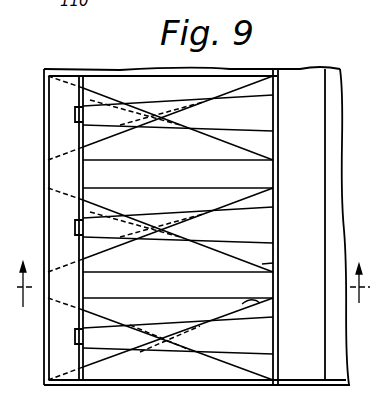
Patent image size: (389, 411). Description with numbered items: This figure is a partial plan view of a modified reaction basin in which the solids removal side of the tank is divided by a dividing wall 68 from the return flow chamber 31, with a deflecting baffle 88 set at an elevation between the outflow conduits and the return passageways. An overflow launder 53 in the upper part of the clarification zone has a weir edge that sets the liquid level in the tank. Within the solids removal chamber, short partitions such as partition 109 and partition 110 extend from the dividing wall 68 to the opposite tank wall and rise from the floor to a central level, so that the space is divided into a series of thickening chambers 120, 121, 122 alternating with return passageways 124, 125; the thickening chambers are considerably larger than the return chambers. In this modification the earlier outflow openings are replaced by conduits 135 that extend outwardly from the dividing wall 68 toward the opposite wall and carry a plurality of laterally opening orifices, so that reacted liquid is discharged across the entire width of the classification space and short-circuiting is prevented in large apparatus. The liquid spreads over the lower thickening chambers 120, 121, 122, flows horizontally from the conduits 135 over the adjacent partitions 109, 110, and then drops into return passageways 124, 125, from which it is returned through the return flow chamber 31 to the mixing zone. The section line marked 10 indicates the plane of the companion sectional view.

The launder 53 is at (63, 71).
The dividing wall 68 is at (275, 102).
The deflecting baffle 88 is at (325, 125).
The return flow chamber 31 is at (336, 167).
The thickening chamber 120 is at (92, 102).
The return passageway 124 is at (102, 173).
The thickening chamber 121 is at (117, 202).
The return passageway 125 is at (103, 283).
The thickening chamber 122 is at (104, 376).
The conduit 135 is at (172, 347).
The partition 109 is at (262, 264).
The partition 110 is at (262, 311).
The section line 10 is at (186, 294).